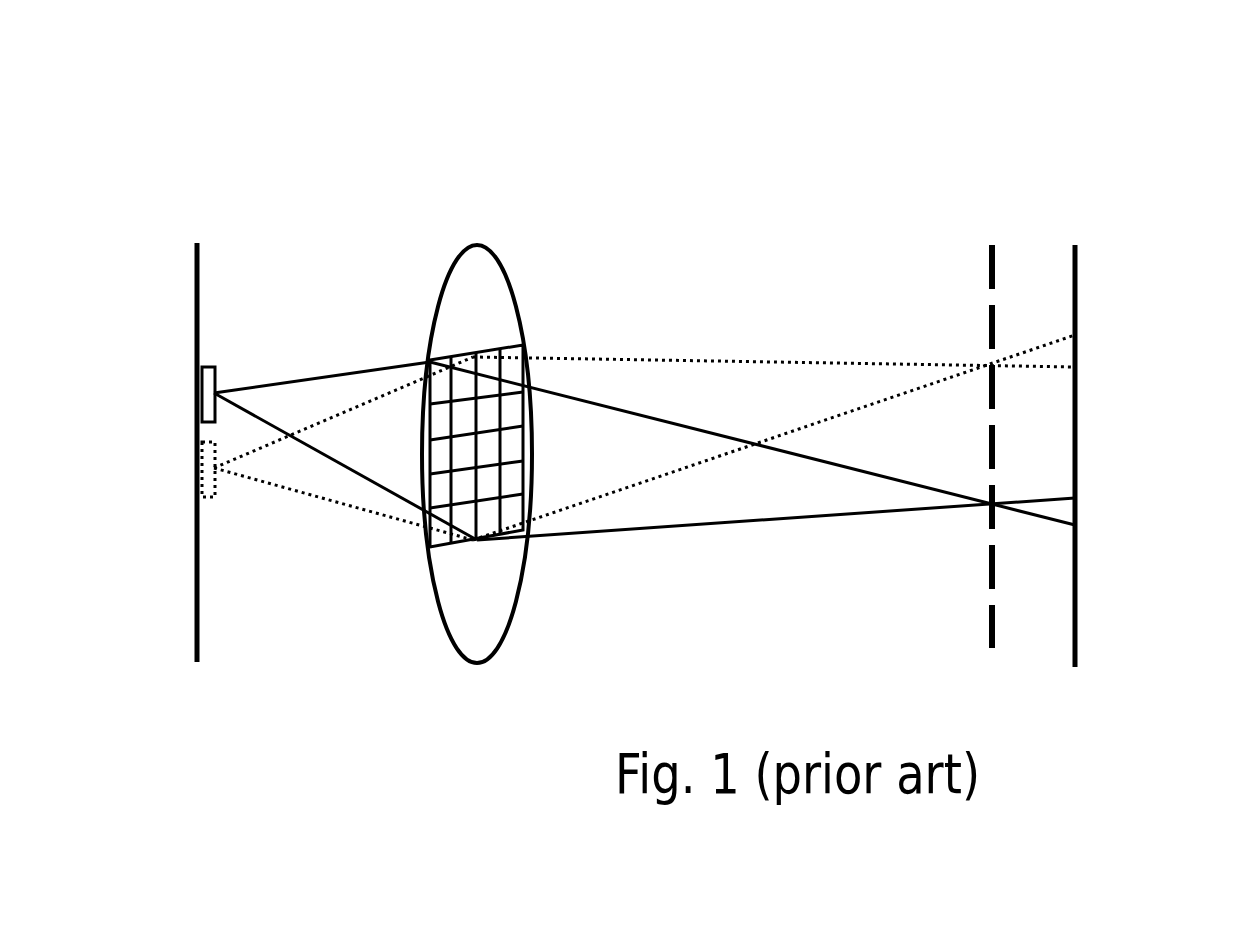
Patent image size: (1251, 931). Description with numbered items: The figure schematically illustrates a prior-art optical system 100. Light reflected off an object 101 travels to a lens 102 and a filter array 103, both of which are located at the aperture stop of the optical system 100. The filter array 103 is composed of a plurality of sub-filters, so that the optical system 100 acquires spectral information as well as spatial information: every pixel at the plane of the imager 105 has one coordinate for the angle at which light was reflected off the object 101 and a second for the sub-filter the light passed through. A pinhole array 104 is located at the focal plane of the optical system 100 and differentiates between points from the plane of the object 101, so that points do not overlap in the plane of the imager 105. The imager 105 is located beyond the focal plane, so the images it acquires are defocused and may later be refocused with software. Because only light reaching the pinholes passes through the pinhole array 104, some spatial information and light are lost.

The optical system 100 is at (712, 133).
The object 101 is at (192, 265).
The lens 102 is at (487, 290).
The filter array 103 is at (513, 363).
The pinhole array 104 is at (995, 263).
The imager 105 is at (1080, 302).